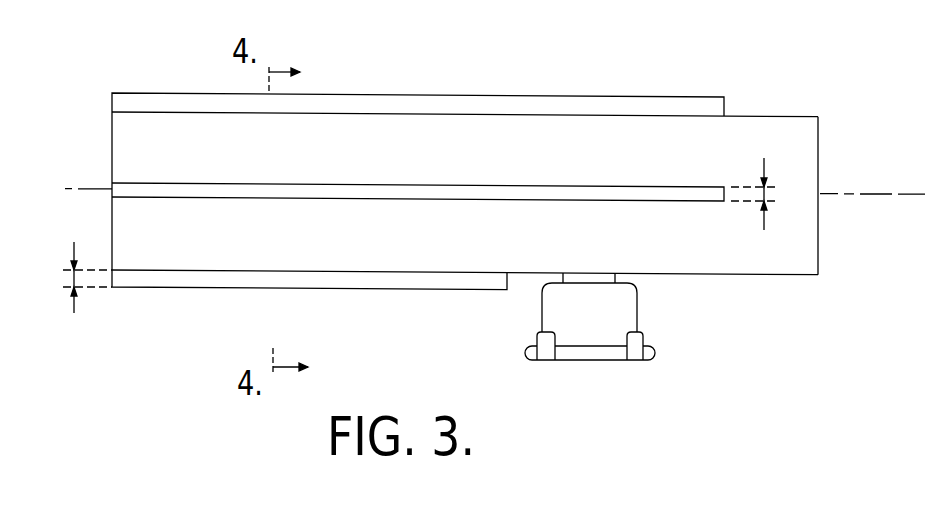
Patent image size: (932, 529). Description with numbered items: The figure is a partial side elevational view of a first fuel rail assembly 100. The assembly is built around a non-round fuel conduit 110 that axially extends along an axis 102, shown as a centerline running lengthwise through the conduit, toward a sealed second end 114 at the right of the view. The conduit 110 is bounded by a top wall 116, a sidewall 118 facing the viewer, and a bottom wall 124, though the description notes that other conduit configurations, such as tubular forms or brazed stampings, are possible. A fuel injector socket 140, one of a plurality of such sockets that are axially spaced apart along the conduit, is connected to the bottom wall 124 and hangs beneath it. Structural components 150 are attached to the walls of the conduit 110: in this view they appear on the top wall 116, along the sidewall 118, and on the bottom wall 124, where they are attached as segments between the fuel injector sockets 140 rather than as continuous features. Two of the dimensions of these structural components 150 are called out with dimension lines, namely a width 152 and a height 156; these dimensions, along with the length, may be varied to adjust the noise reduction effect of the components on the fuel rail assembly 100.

The first fuel rail assembly 100 is at (690, 431).
The axis 102 is at (58, 172).
The non-round fuel conduit 110 is at (465, 207).
The sealed second end 114 is at (818, 188).
The top wall 116 is at (776, 116).
The sidewall 118 is at (795, 257).
The bottom wall 124 is at (721, 275).
The fuel injector socket 140 is at (594, 323).
The structural component 150 is at (417, 185).
The width 152 is at (767, 188).
The height 156 is at (74, 277).